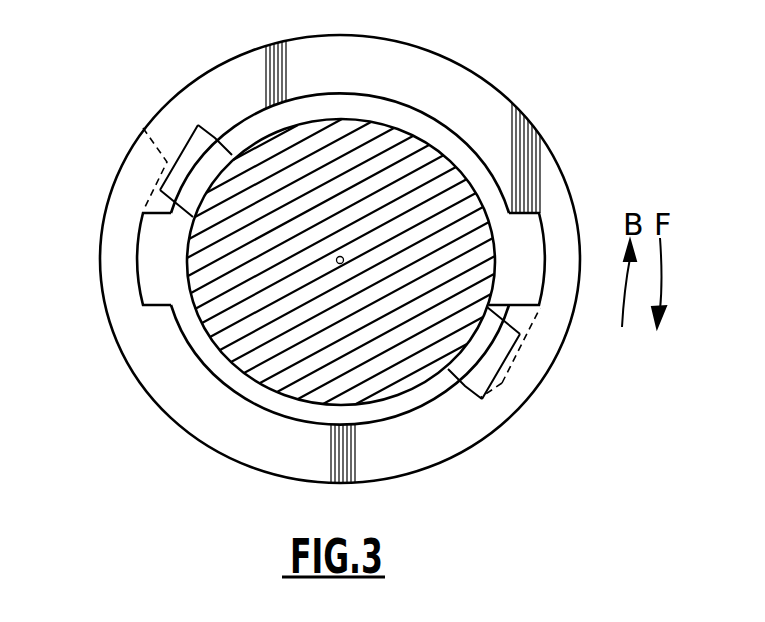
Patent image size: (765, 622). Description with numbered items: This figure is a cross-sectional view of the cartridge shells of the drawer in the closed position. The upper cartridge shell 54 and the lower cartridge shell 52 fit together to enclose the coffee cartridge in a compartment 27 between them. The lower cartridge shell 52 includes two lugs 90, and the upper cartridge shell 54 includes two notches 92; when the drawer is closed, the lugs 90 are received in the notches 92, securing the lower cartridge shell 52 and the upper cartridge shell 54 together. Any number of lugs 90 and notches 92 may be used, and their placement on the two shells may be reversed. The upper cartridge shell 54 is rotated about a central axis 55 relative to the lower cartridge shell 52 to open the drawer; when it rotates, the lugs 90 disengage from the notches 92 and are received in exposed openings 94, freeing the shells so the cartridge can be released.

The compartment 27 is at (377, 412).
The lower cartridge shell 52 is at (376, 117).
The upper cartridge shell 54 is at (463, 87).
The central axis 55 is at (339, 257).
The lug 90 is at (193, 143).
The notch 92 is at (143, 128).
The exposed opening 94 is at (157, 255).